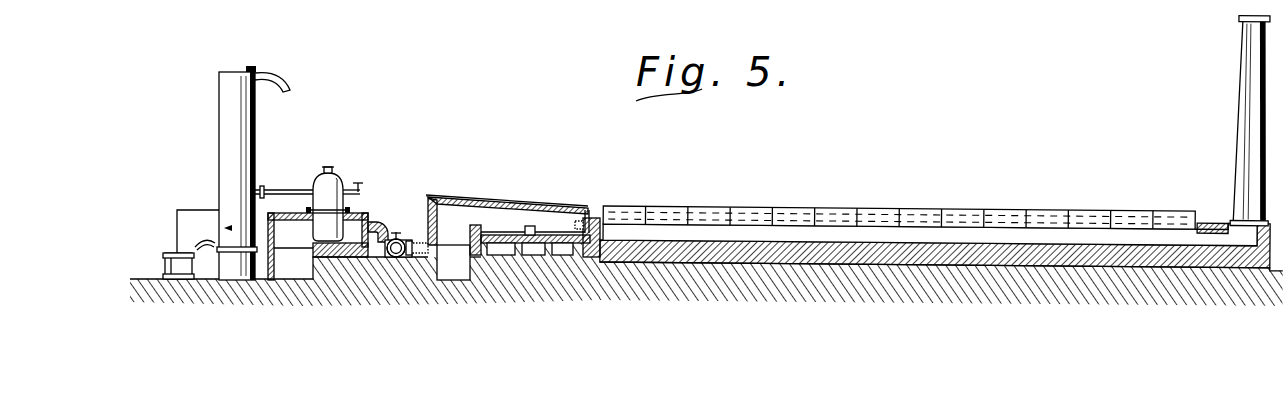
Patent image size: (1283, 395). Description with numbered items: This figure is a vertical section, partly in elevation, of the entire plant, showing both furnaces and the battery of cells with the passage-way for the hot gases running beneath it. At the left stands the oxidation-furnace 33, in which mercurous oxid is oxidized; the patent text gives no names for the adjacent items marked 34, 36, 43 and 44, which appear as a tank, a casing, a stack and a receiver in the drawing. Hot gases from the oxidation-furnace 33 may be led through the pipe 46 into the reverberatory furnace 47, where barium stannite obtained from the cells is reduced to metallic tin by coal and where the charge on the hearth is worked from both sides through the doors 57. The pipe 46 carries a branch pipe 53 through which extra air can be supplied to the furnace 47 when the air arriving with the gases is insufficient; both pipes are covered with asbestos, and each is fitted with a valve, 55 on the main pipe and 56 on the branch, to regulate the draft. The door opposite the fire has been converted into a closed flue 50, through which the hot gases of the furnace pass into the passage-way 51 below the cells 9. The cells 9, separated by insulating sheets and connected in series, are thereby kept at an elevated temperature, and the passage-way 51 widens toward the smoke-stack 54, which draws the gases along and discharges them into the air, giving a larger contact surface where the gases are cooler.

The cells 9 is at (630, 212).
The oxidation-furnace 33 is at (366, 219).
The tank 34 is at (322, 183).
The box / casing 36 is at (322, 228).
The chimney stack 43 is at (232, 152).
The receiver tank 44 is at (172, 263).
The pipe 46 is at (422, 240).
The reverberatory furnace 47 is at (497, 206).
The flue 50 is at (594, 220).
The passage-way 51 is at (935, 243).
The branch pipe 53 is at (398, 257).
The smoke-stack 54 is at (1250, 125).
The valve 55 is at (388, 246).
The valve 56 is at (397, 231).
The doors 57 is at (531, 226).